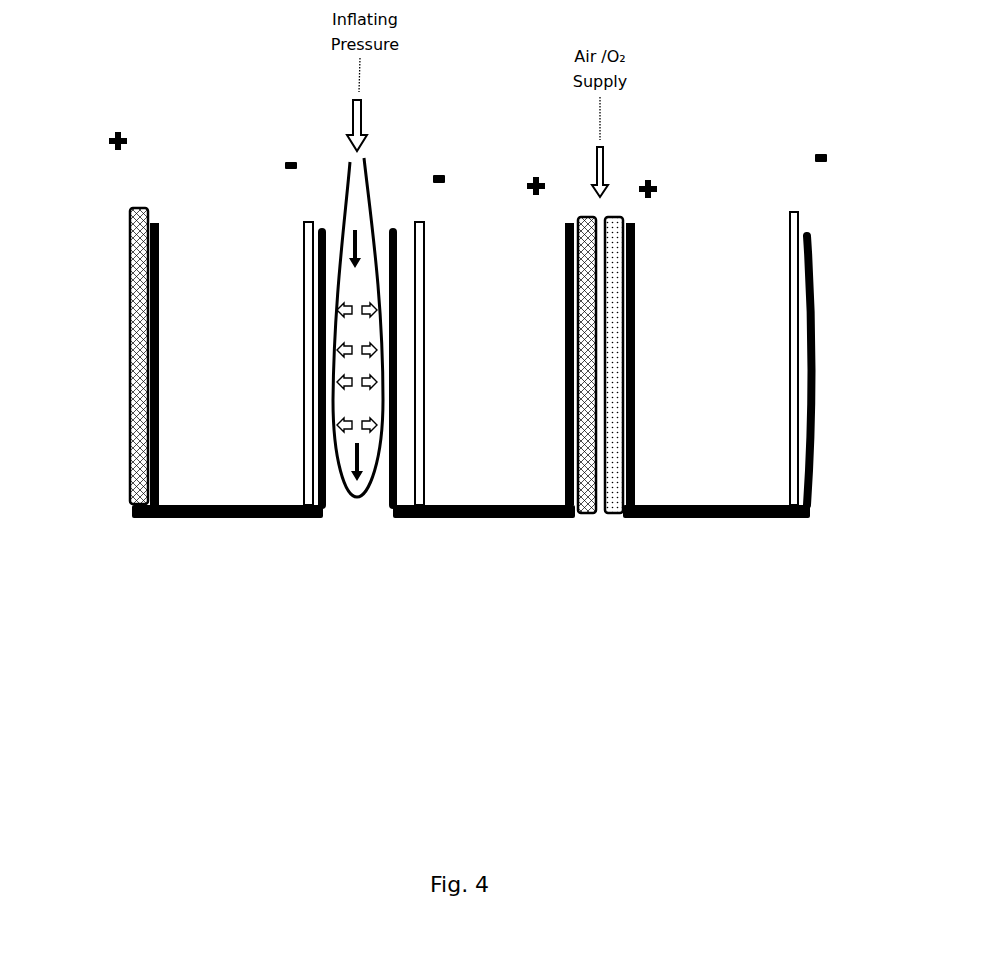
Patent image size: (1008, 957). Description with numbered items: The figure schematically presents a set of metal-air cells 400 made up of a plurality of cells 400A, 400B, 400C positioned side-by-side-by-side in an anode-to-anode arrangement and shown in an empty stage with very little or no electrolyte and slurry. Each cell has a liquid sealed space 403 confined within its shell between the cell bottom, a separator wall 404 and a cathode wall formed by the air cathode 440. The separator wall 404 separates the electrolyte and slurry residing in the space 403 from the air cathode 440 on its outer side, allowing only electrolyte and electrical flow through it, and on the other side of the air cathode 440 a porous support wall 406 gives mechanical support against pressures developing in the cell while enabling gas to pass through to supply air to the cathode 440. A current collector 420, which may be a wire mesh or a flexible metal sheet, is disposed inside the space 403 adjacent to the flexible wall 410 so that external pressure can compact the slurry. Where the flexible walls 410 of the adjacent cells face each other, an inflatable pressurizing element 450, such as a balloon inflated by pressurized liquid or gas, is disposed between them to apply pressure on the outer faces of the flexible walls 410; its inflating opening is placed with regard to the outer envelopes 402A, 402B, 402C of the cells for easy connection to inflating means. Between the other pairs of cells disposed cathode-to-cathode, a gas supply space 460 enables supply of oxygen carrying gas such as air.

The set of metal-air cells 400 is at (589, 741).
The cell 400A is at (215, 606).
The cell 400B is at (455, 606).
The cell 400C is at (690, 606).
The cell outer envelope 402A is at (181, 540).
The cell outer envelope 402B is at (509, 536).
The cell outer envelope 402C is at (736, 536).
The liquid sealed space 403 is at (265, 445).
The separator wall 404 is at (157, 223).
The porous support wall 406 is at (130, 273).
The flexible wall 410 is at (322, 228).
The current collector 420 is at (308, 222).
The air cathode 440 is at (155, 223).
The inflatable pressurizing element 450 is at (362, 505).
The gas supply space 460 is at (598, 506).